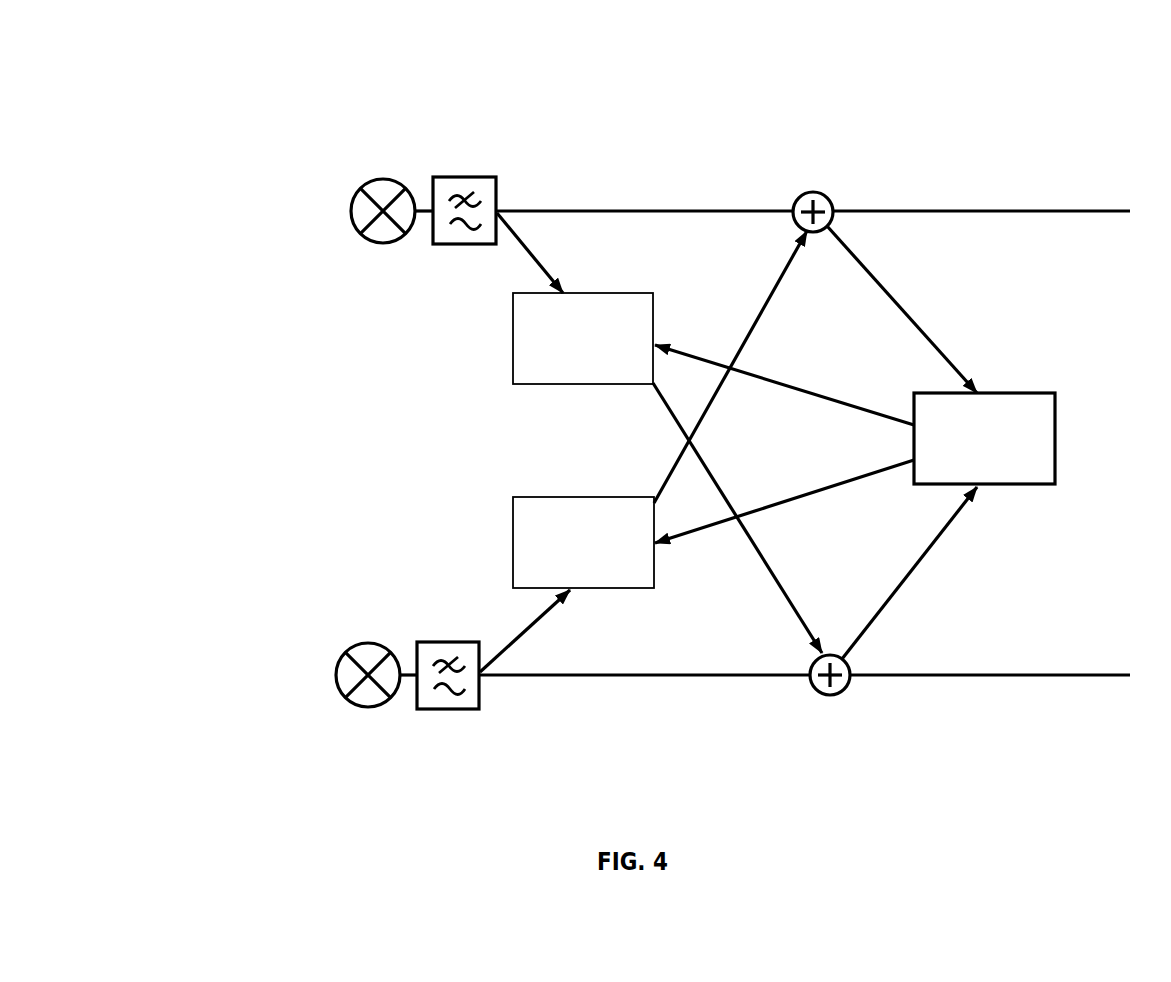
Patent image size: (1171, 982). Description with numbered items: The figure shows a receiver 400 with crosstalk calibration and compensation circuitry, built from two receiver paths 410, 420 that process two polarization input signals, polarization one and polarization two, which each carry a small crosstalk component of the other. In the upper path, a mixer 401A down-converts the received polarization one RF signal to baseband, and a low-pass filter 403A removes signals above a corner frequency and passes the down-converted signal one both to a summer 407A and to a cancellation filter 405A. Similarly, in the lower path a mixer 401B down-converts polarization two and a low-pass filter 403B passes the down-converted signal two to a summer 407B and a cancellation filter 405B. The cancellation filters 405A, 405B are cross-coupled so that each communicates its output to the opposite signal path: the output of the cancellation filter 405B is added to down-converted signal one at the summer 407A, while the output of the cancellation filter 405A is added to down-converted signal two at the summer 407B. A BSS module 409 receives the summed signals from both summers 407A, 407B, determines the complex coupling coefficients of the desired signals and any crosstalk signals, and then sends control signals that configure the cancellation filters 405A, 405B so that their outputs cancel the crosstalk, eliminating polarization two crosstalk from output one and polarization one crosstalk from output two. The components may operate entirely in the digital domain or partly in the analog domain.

The receiver 400 is at (262, 102).
The mixer 401A is at (383, 178).
The low-pass filter 403A is at (484, 177).
The cancellation filter 405A is at (608, 378).
The summer 407A is at (815, 192).
The receiver path 410 is at (328, 313).
The mixer 401B is at (370, 709).
The low-pass filter 403B is at (472, 710).
The cancellation filter 405B is at (610, 581).
The summer 407B is at (843, 696).
The receiver path 420 is at (312, 626).
The BSS module 409 is at (1002, 463).